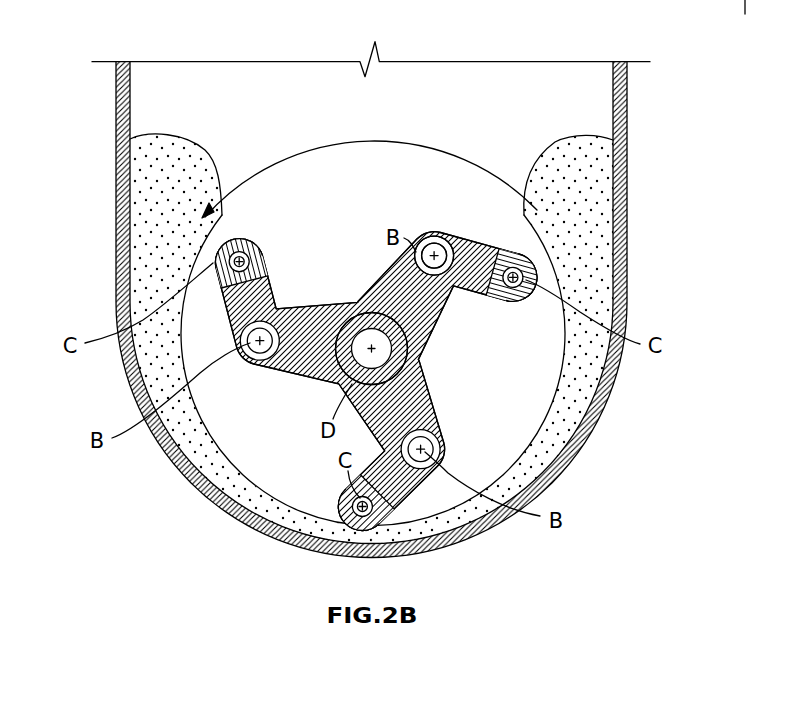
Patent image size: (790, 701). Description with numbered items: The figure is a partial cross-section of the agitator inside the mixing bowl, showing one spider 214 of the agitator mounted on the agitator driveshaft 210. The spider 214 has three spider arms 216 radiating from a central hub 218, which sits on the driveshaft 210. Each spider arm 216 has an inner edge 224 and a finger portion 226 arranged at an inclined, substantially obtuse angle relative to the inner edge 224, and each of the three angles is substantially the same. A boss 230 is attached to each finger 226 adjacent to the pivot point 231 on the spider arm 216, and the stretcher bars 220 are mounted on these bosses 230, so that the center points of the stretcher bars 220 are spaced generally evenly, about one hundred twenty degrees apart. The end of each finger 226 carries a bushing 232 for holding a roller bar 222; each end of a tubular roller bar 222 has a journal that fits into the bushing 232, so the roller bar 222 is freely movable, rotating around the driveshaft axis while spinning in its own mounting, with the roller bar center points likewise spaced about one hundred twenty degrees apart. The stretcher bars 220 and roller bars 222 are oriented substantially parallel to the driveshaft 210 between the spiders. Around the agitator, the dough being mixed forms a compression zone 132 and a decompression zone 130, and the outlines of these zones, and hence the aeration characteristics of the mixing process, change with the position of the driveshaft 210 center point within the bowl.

The decompression zone 130 is at (608, 173).
The compression zone 132 is at (158, 247).
The agitator driveshaft 210 is at (382, 349).
The spider 214 is at (379, 225).
The spider arm 216 is at (393, 280).
The central hub 218 is at (347, 302).
The stretcher bar 220 is at (427, 243).
The roller bar 222 is at (250, 243).
The inner edge 224 is at (310, 306).
The finger portion 226 is at (536, 208).
The boss 230 is at (454, 248).
The pivot point 231 is at (428, 248).
The bushing 232 is at (236, 240).